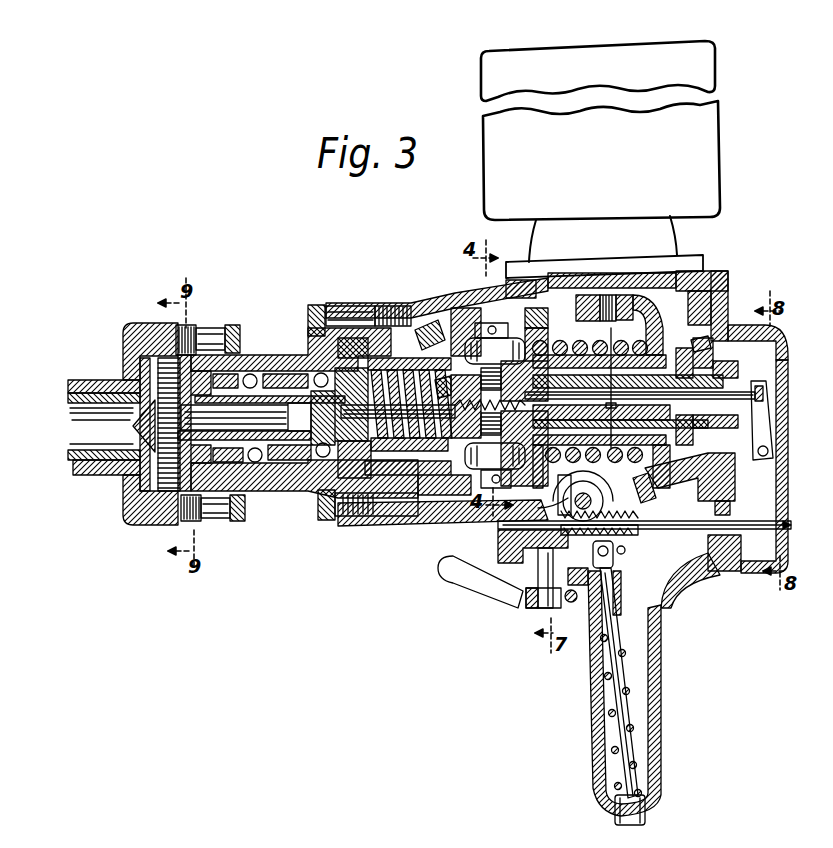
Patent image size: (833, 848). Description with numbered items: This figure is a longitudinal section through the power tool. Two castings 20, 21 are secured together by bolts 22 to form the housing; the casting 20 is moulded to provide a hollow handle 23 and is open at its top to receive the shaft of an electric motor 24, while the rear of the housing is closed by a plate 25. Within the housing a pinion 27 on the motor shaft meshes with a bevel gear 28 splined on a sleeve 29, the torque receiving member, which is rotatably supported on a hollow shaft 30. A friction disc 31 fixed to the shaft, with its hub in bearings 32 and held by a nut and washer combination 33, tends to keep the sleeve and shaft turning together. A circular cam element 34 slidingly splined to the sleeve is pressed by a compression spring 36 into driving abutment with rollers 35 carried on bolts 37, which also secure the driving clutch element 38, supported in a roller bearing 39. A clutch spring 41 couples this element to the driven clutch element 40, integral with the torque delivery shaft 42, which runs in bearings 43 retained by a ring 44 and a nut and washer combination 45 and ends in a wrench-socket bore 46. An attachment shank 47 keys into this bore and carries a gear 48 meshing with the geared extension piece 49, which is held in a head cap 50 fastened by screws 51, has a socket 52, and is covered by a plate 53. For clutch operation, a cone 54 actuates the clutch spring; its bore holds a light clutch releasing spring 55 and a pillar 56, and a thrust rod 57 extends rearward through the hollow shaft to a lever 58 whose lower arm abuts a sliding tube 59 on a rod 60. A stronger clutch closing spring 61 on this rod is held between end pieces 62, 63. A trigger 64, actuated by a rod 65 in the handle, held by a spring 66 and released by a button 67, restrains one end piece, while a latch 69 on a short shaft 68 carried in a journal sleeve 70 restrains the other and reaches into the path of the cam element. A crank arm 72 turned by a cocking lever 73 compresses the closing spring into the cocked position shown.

The casting 20 is at (412, 295).
The casting 21 is at (348, 293).
The bolts 22 is at (308, 298).
The hollow handle 23 is at (653, 700).
The electric motor 24 is at (600, 159).
The plate 25 is at (755, 389).
The pinion 27 is at (568, 300).
The bevel gear 28 is at (655, 300).
The sleeve 29 is at (672, 340).
The hollow shaft 30 is at (715, 372).
The friction disc 31 is at (672, 445).
The bearings 32 is at (722, 318).
The nut and washer combination 33 is at (730, 358).
The circular cam element 34 is at (520, 322).
The rollers 35 is at (464, 330).
The compression spring 36 is at (563, 342).
The bolts 37 is at (486, 316).
The driving clutch element 38 is at (447, 300).
The roller bearing 39 is at (388, 298).
The driven clutch element 40 is at (365, 455).
The clutch spring 41 is at (385, 455).
The torque delivery shaft 42 is at (288, 486).
The bearings 43 is at (246, 366).
The ring 44 is at (340, 510).
The nut and washer combination 45 is at (238, 347).
The wrench-socket bore 46 is at (245, 455).
The attachment shank 47 is at (205, 513).
The gear 48 is at (132, 497).
The extension piece 49 is at (60, 385).
The head cap 50 is at (116, 325).
The screws 51 is at (224, 317).
The socket 52 is at (62, 440).
The plate 53 is at (180, 316).
The cone 54 is at (435, 495).
The clutch releasing spring 55 is at (470, 495).
The pillar 56 is at (340, 330).
The thrust rod 57 is at (603, 345).
The lever 58 is at (760, 420).
The sliding tube 59 is at (707, 500).
The rod 60 is at (785, 516).
The clutch closing spring 61 is at (635, 492).
The end piece 62 is at (630, 505).
The end piece 63 is at (593, 554).
The trigger 64 is at (625, 545).
The rod 65 is at (603, 626).
The spring 66 is at (618, 683).
The button 67 is at (637, 802).
The short shaft 68 is at (583, 488).
The latch 69 is at (550, 485).
The journal sleeve 70 is at (540, 502).
The crank arm 72 is at (528, 590).
The cocking lever 73 is at (480, 582).